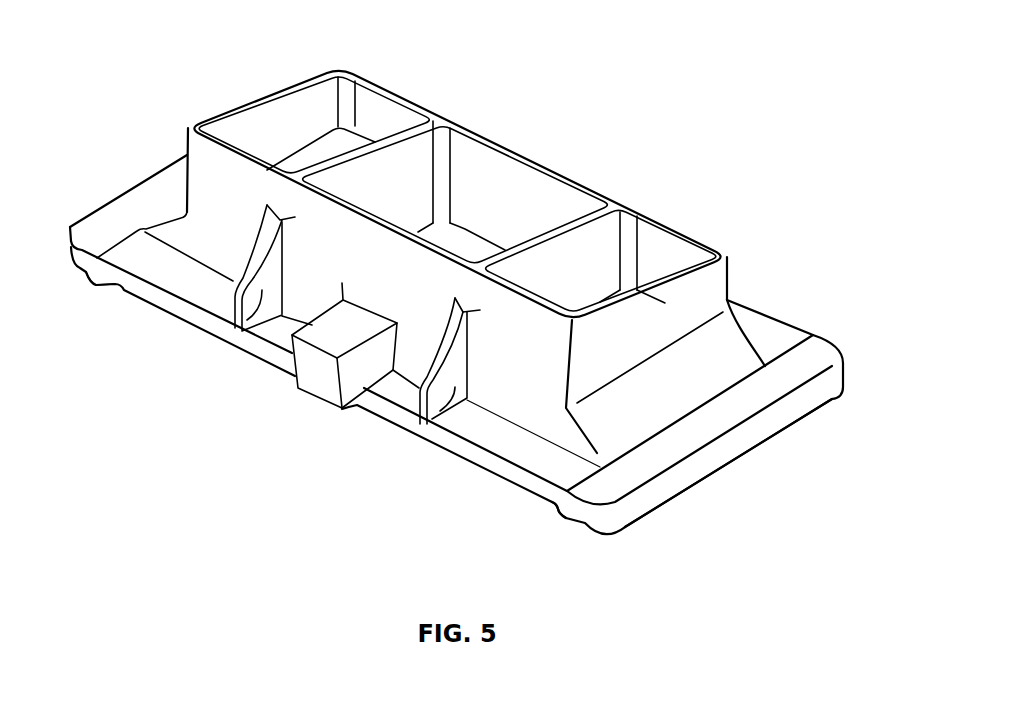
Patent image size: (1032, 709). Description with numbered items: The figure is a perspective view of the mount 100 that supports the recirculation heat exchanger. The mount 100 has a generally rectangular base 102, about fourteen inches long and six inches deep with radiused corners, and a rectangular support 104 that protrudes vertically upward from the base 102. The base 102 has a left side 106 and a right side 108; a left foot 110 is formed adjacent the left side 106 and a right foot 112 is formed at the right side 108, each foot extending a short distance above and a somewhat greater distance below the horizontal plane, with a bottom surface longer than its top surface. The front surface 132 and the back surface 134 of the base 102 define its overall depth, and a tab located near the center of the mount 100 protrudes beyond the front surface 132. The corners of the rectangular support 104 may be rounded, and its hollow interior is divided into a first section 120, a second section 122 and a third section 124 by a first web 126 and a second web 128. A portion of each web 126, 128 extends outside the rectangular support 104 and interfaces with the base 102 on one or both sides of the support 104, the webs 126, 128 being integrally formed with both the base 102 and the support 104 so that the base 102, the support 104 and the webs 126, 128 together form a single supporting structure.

The mount 100 is at (812, 40).
The base 102 is at (812, 322).
The rectangular support 104 is at (722, 180).
The left side 106 is at (110, 200).
The right side 108 is at (730, 450).
The left foot 110 is at (82, 266).
The right foot 112 is at (580, 512).
The first section 120 is at (385, 120).
The second section 122 is at (518, 187).
The third section 124 is at (652, 265).
The first web 126 is at (235, 323).
The second web 128 is at (430, 427).
The front surface 132 is at (392, 422).
The back surface 134 is at (777, 318).